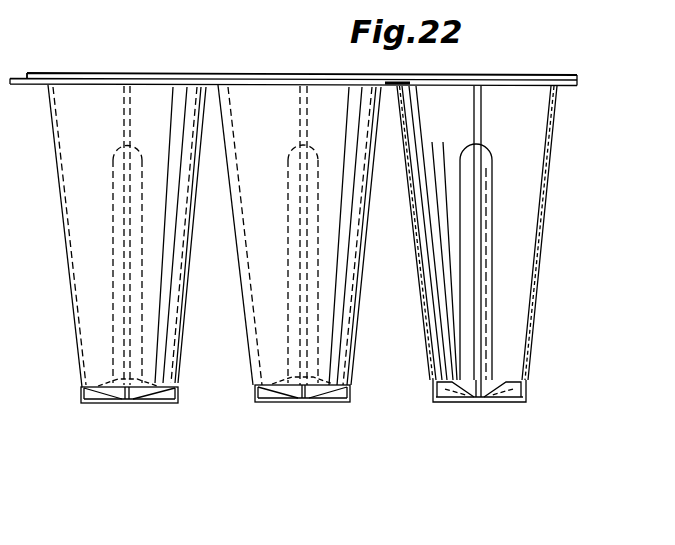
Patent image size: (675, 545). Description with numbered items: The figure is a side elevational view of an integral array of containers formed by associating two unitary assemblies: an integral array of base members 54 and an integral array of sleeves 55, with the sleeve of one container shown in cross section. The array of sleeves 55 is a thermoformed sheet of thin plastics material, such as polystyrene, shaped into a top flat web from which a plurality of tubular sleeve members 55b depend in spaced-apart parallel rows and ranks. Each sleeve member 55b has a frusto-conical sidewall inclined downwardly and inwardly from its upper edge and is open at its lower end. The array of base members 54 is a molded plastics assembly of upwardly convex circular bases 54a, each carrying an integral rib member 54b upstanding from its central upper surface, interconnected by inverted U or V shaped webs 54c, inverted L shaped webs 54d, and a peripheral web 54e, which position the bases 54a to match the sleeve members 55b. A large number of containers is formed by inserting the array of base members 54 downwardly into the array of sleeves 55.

The integral array of sleeves 55 is at (15, 86).
The peripheral web 54e is at (38, 74).
The sleeve member 55b is at (60, 242).
The integral array of base members 54 is at (265, 404).
The circular base 54a is at (457, 403).
The rib member 54b is at (492, 235).
The inverted U or V shaped web 54c is at (413, 135).
The inverted L shaped web 54d is at (482, 127).